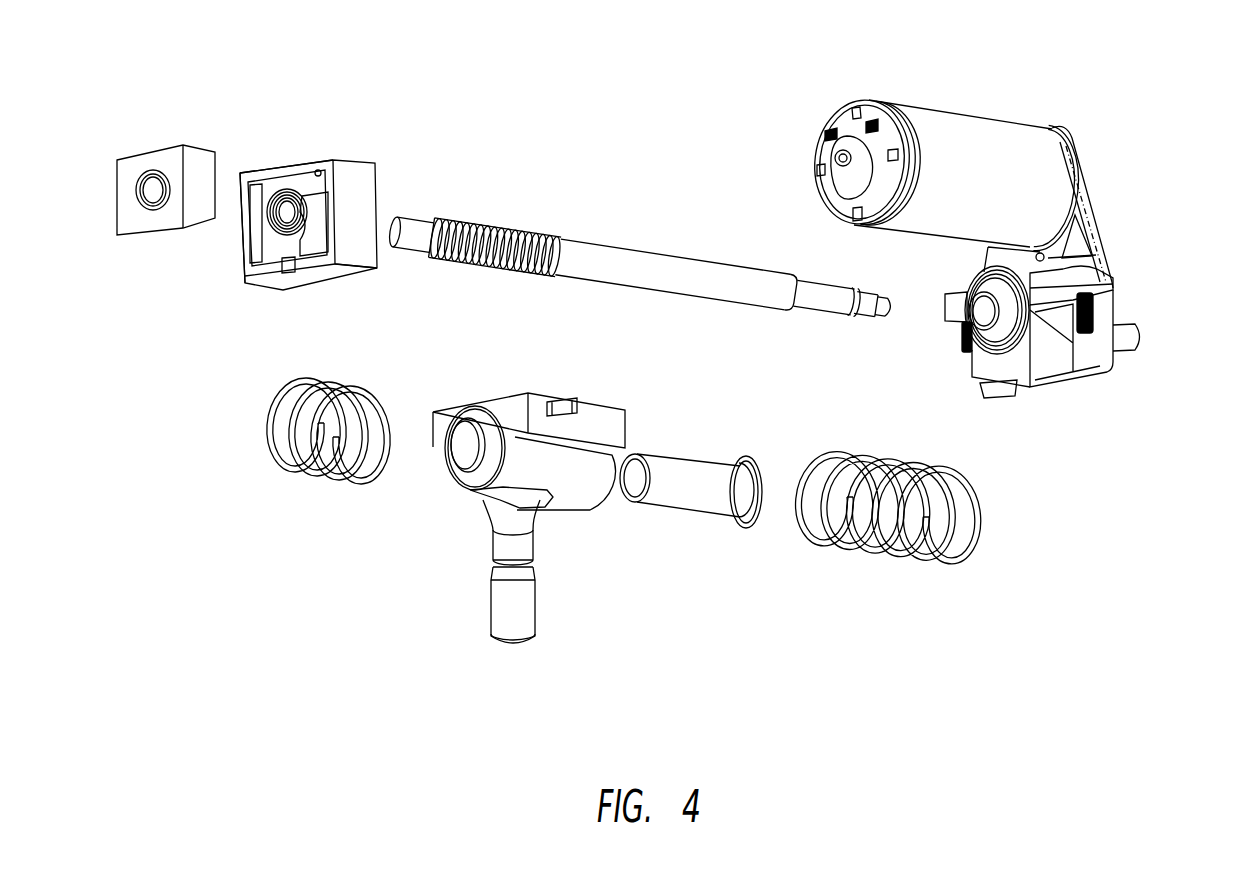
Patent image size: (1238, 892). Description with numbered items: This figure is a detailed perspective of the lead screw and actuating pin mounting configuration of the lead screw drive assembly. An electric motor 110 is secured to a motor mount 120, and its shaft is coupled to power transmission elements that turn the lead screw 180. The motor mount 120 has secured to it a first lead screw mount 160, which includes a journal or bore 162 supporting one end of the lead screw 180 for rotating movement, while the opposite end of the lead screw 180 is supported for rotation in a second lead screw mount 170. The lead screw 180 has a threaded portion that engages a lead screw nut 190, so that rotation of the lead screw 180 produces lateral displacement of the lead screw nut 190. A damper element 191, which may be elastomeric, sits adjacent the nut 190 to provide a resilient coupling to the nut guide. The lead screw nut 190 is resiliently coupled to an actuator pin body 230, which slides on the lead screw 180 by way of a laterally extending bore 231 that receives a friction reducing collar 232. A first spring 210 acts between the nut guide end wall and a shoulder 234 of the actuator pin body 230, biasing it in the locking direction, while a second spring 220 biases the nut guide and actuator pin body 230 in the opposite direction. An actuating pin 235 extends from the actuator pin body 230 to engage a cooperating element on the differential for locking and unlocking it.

The electric motor 110 is at (970, 118).
The motor mount 120 is at (1105, 228).
The first lead screw mount 160 is at (1032, 380).
The journal or bore 162 is at (960, 337).
The second lead screw mount 170 is at (141, 228).
The lead screw 180 is at (650, 247).
The lead screw nut 190 is at (271, 281).
The damper element 191 is at (360, 276).
The spring 210 is at (296, 472).
The spring 220 is at (985, 528).
The actuator pin body 230 is at (550, 518).
The laterally extending bore 231 is at (468, 466).
The collar 232 is at (687, 515).
The shoulder 234 is at (478, 500).
The actuating pin 235 is at (524, 608).